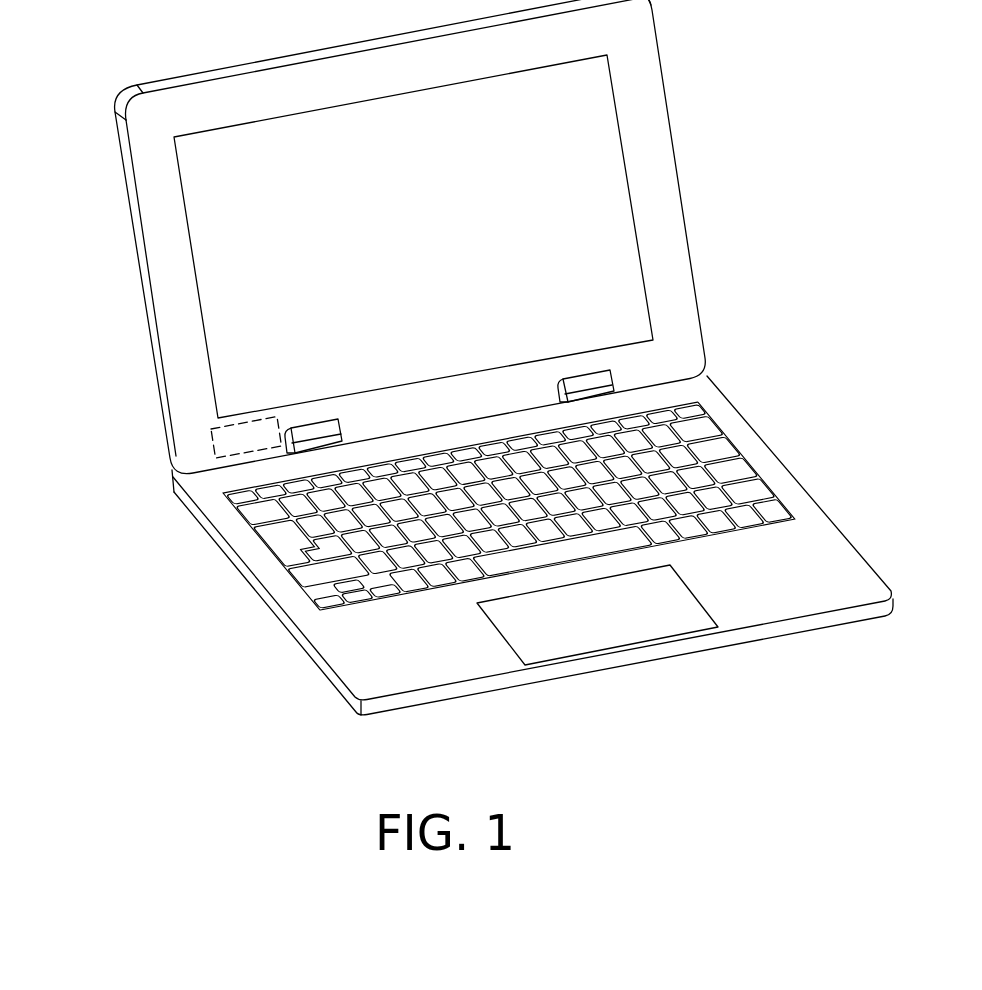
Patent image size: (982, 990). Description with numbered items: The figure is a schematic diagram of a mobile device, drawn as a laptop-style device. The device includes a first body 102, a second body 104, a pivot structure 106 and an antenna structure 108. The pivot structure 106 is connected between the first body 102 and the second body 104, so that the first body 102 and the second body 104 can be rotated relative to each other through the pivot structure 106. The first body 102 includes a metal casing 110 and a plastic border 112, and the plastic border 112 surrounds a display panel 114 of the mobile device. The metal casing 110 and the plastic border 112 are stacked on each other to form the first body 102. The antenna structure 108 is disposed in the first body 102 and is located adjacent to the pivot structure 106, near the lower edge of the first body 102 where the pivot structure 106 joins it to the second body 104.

The first body 102 is at (419, 237).
The second body 104 is at (789, 428).
The pivot structure 106 is at (315, 410).
The antenna structure 108 is at (209, 433).
The metal casing 110 is at (125, 194).
The plastic border 112 is at (144, 250).
The display panel 114 is at (237, 310).